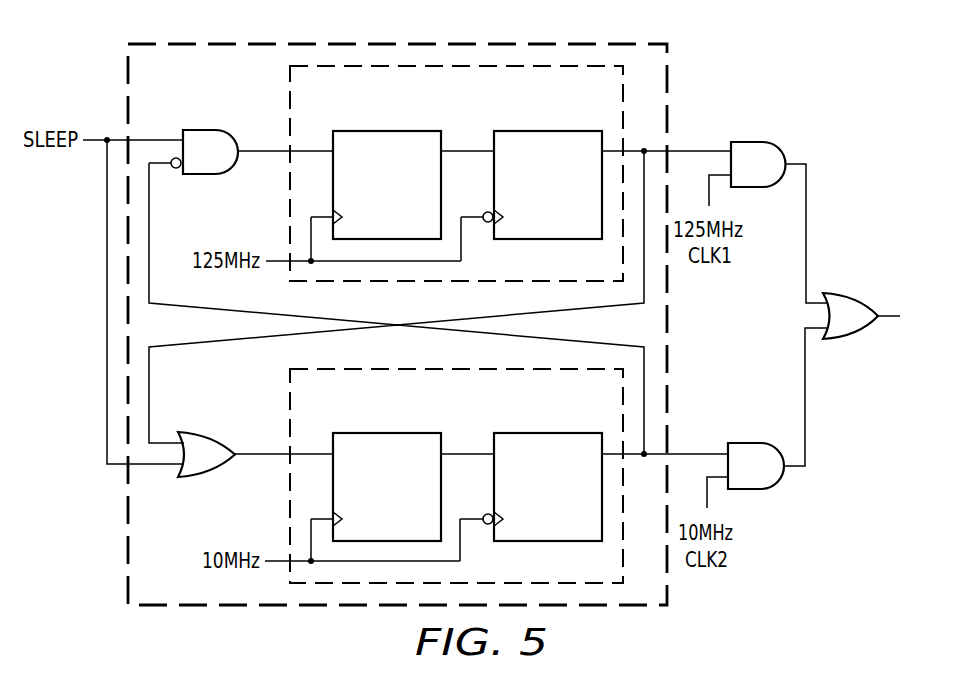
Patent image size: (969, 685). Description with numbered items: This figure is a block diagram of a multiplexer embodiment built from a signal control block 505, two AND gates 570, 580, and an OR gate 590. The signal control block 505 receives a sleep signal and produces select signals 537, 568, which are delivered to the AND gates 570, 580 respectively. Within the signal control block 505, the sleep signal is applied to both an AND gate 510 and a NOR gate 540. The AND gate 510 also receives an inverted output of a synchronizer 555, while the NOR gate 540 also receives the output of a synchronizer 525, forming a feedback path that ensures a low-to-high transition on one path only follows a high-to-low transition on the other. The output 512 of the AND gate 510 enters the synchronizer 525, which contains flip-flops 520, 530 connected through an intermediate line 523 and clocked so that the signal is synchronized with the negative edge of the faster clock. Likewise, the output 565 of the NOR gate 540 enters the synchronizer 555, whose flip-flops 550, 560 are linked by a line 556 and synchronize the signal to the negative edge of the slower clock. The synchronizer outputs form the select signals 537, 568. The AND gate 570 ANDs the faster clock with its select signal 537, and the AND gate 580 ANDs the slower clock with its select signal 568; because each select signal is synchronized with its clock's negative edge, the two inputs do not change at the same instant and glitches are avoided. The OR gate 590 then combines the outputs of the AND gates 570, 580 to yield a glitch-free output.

The signal control block 505 is at (170, 607).
The AND gate 510 is at (203, 128).
The output of AND gate 510 512 is at (268, 148).
The flip-flop 520 is at (385, 128).
The output of flip flop 520 523 is at (470, 148).
The synchronizer 525 is at (288, 193).
The flip-flop 530 is at (548, 128).
The select signal 537 is at (690, 148).
The NOR gate 540 is at (197, 479).
The flip-flop 550 is at (385, 430).
The synchronizer 555 is at (288, 395).
The output of flip flop 550 556 is at (470, 450).
The flip-flop 560 is at (548, 430).
The output of OR gate 540 565 is at (267, 456).
The select signal 568 is at (688, 452).
The AND gate 570 is at (755, 140).
The AND gate 580 is at (750, 442).
The OR gate 590 is at (840, 340).